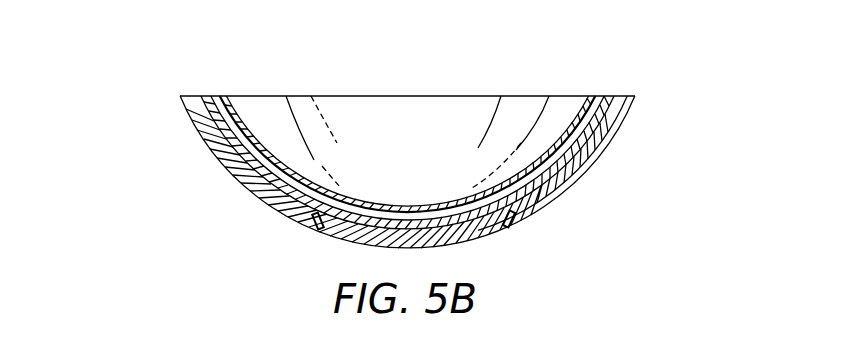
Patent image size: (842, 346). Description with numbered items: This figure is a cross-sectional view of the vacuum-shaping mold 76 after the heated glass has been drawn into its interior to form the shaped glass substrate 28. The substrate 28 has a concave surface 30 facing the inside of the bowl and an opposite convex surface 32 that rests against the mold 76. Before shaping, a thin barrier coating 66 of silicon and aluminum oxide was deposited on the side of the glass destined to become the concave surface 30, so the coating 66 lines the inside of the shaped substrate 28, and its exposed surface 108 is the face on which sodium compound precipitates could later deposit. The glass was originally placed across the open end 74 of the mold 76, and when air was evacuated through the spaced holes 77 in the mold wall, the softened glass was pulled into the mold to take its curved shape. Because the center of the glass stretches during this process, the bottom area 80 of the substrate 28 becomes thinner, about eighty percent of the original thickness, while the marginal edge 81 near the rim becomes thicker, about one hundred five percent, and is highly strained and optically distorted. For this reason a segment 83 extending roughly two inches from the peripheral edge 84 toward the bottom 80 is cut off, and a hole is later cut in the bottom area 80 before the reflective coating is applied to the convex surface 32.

The shaped glass substrate 28 is at (282, 213).
The concave surface 30 is at (548, 190).
The convex surface 32 is at (577, 165).
The barrier coating 66 is at (278, 143).
The open end 74 is at (189, 95).
The vacuum-shaping mold 76 is at (194, 133).
The spaced holes 77 is at (317, 235).
The bottom area 80 is at (388, 203).
The marginal edge 81 is at (231, 108).
The segment 83 is at (242, 128).
The peripheral edge 84 is at (212, 95).
The surface 108 is at (367, 202).